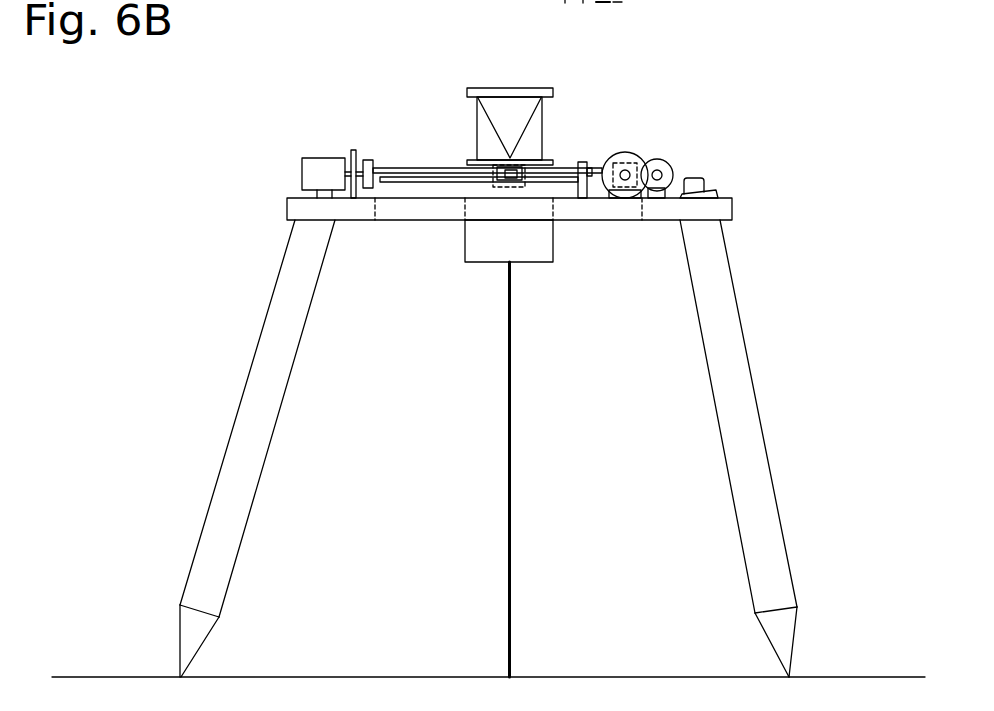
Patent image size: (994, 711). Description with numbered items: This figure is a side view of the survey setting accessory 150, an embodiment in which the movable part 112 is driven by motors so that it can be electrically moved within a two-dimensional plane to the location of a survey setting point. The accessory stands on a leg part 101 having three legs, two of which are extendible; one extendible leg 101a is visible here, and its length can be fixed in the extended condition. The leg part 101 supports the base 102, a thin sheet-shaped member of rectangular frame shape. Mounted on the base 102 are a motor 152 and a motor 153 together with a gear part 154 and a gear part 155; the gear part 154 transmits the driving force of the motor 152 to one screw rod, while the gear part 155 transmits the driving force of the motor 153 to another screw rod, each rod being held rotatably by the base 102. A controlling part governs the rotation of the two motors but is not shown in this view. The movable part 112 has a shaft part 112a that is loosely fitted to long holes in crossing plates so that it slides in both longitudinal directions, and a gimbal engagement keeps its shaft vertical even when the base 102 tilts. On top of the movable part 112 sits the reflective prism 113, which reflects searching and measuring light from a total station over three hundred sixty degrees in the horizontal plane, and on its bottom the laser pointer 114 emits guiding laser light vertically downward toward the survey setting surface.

The leg part 101 is at (243, 372).
The extendible leg 101a is at (747, 417).
The base 102 is at (718, 212).
The movable part 112 is at (552, 135).
The shaft part 112a is at (505, 187).
The reflective prism 113 is at (500, 150).
The laser pointer 114 is at (543, 243).
The survey setting accessory 150 is at (738, 118).
The motor 152 is at (315, 180).
The motor 153 is at (668, 170).
The gear part 154 is at (342, 152).
The gear part 155 is at (647, 152).